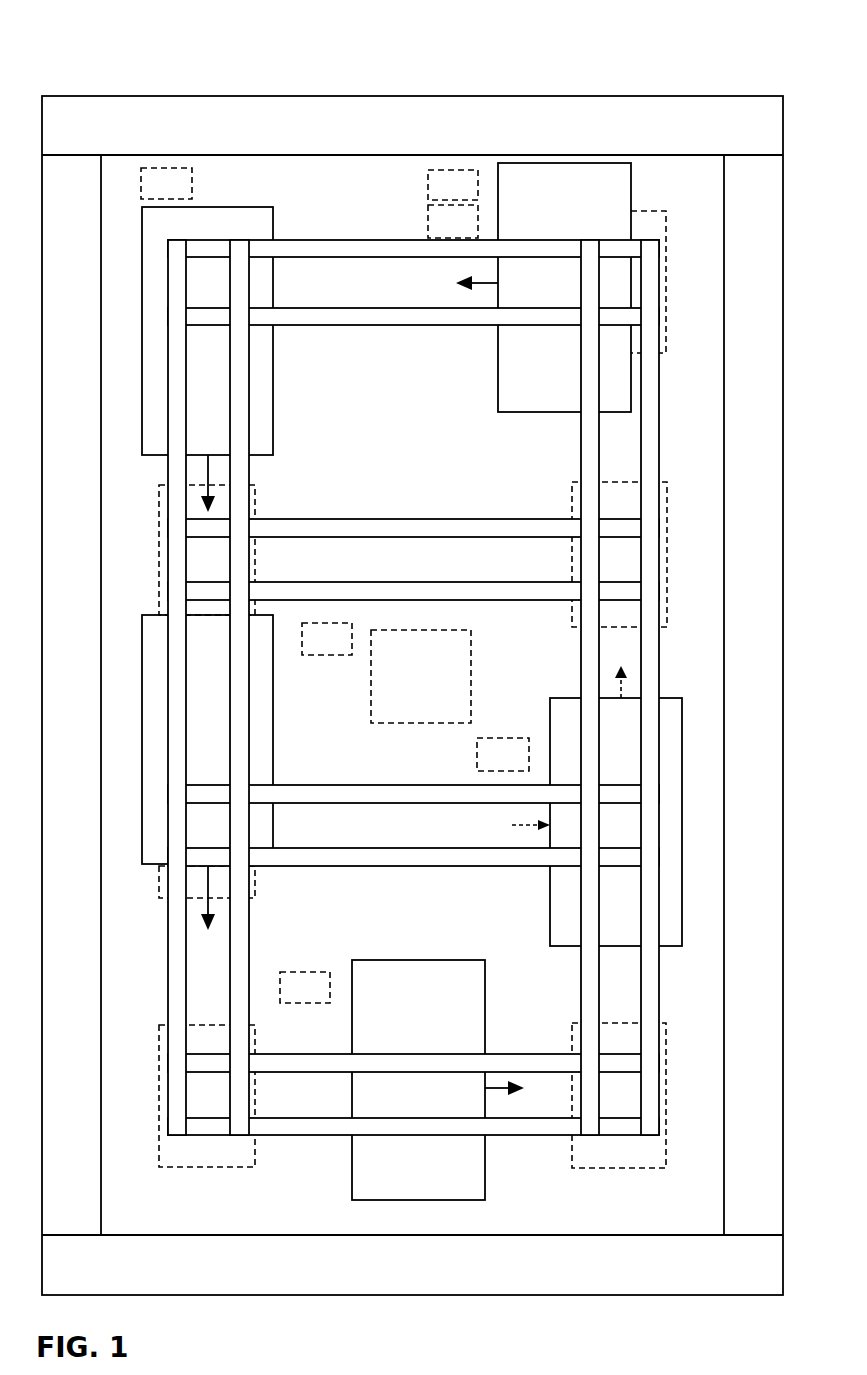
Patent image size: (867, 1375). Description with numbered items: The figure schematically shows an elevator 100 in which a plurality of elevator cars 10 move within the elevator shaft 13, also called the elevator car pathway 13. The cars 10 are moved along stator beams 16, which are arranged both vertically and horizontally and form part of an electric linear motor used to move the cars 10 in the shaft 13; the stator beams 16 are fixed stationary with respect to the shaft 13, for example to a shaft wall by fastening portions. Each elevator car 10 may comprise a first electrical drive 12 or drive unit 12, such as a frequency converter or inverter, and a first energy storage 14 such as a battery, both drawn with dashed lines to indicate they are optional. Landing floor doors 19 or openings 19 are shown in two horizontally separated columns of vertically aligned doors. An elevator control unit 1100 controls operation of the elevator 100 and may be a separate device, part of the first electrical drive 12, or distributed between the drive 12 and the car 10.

The elevator 100 is at (116, 58).
The elevator car 10 is at (193, 375).
The first electrical drive 12 is at (209, 207).
The elevator shaft 13 is at (390, 476).
The first energy storage 14 is at (498, 219).
The stator beam 16 is at (178, 540).
The landing floor door 19 is at (193, 568).
The elevator control unit 1100 is at (394, 690).